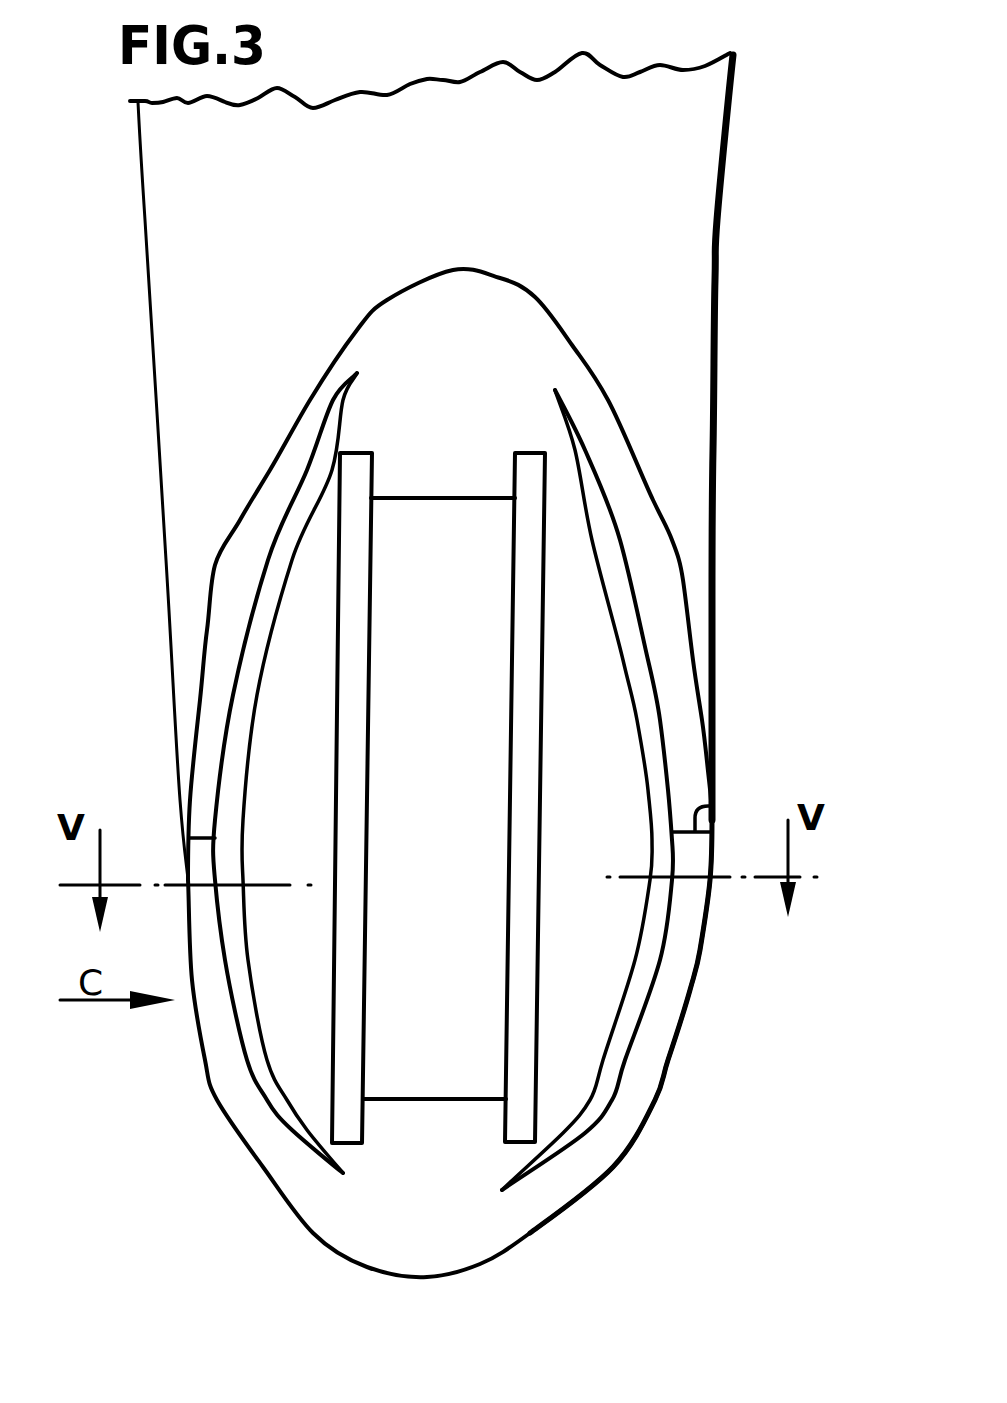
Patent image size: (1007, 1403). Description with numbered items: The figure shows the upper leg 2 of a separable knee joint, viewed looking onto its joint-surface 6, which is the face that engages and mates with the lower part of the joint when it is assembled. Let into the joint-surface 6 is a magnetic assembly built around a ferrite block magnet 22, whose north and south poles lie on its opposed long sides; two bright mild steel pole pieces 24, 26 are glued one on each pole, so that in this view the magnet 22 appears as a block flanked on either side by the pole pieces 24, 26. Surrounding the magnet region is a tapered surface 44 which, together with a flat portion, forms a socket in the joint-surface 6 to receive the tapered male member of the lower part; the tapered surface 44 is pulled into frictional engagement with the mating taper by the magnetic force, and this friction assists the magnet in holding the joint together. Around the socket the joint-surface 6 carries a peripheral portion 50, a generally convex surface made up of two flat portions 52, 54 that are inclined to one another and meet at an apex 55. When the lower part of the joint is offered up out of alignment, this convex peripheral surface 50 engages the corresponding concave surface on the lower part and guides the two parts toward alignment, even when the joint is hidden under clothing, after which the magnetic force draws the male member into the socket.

The upper leg 2 is at (680, 402).
The joint-surface 6 is at (590, 676).
The ferrite block magnet 22 is at (455, 758).
The pole piece 24 is at (362, 460).
The pole piece 26 is at (524, 460).
The tapered surface 44 is at (248, 695).
The peripheral portion 50 is at (222, 613).
The flat portion 52 is at (642, 522).
The flat portion 54 is at (663, 1023).
The apex 55 is at (712, 806).